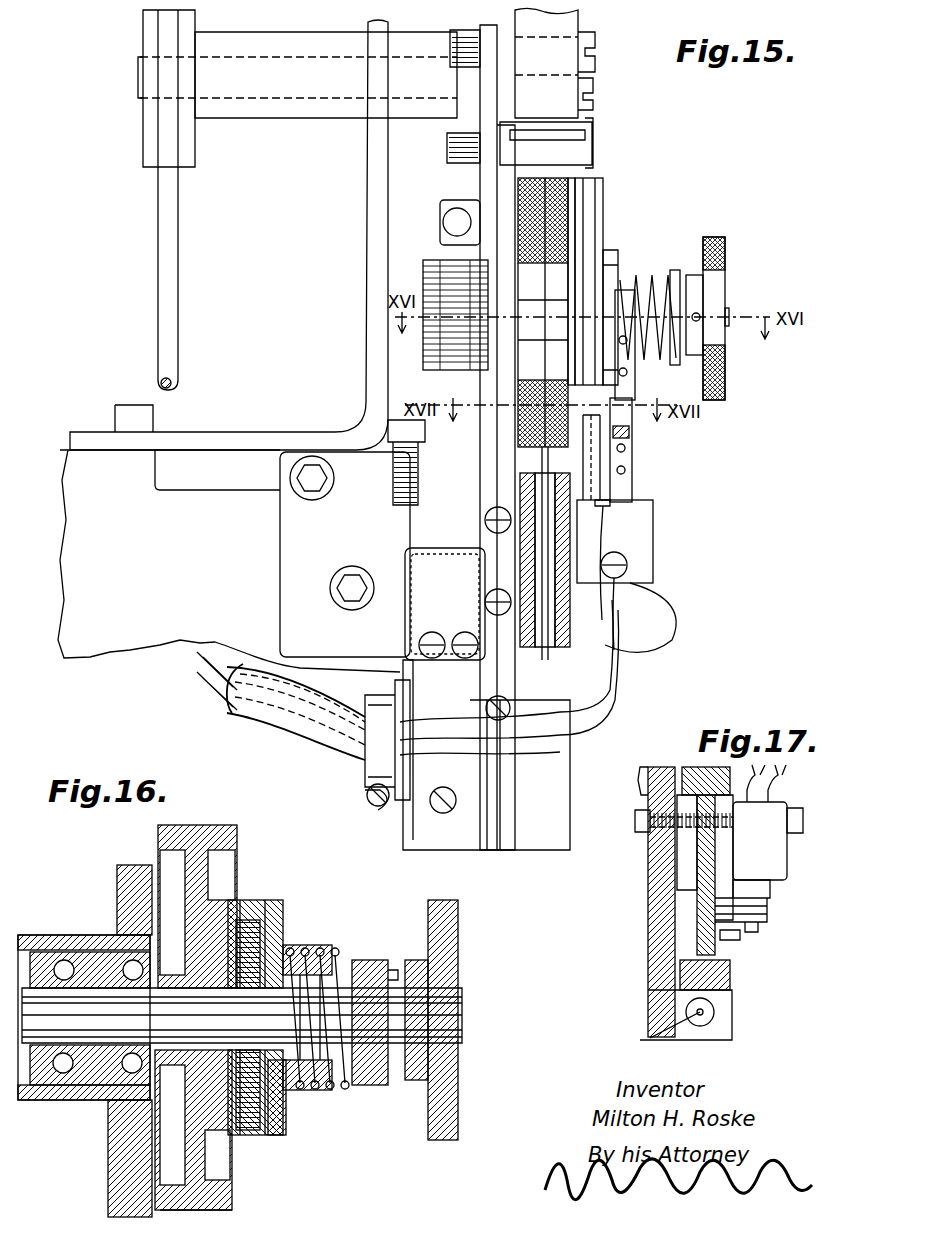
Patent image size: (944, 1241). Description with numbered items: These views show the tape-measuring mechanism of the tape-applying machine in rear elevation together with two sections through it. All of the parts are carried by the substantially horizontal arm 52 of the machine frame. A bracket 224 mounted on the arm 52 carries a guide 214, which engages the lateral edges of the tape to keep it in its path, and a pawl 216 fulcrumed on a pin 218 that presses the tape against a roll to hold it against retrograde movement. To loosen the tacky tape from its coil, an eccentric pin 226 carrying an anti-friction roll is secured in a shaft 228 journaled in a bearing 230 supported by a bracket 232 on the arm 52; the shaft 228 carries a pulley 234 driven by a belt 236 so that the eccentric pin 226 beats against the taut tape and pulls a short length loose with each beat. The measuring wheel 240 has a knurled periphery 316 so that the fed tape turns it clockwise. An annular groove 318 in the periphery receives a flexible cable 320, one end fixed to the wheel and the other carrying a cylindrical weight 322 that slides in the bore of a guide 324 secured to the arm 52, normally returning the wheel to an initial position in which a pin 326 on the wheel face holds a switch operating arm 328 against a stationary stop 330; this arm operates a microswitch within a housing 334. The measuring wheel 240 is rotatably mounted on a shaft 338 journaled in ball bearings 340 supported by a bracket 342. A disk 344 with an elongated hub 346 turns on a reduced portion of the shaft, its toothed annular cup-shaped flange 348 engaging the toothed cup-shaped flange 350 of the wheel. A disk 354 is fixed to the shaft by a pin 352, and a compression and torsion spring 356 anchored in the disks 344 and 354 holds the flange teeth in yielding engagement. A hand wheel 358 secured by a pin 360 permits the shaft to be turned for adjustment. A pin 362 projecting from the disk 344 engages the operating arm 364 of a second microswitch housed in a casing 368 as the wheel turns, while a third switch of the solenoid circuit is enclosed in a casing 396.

In FIG. 15, the arm 52 is at (98, 460).
In FIG. 15, the guide 214 is at (588, 140).
In FIG. 15, the pawl 216 is at (556, 48).
In FIG. 15, the pin 218 is at (596, 45).
In FIG. 15, the bracket 224 is at (484, 183).
In FIG. 15, the eccentric pin 226 is at (596, 108).
In FIG. 15, the shaft 228 is at (337, 100).
In FIG. 15, the bearing 230 is at (270, 121).
In FIG. 15, the bracket 232 is at (372, 160).
In FIG. 15, the pulley 234 is at (143, 160).
In FIG. 15, the belt 236 is at (172, 215).
In FIG. 15, the measuring wheel 240 is at (572, 202).
In FIG. 16, the measuring wheel 240 is at (258, 852).
In FIG. 17, the measuring wheel 240 is at (732, 982).
In FIG. 15, the knurled periphery 316 is at (578, 187).
In FIG. 16, the knurled periphery 316 is at (197, 825).
In FIG. 15, the annular groove 318 is at (592, 230).
In FIG. 15, the flexible cable 320 is at (545, 525).
In FIG. 16, the flexible cable 320 is at (200, 1215).
In FIG. 17, the flexible cable 320 is at (698, 1014).
In FIG. 15, the cylindrical weight 322 is at (606, 657).
In FIG. 17, the cylindrical weight 322 is at (716, 1016).
In FIG. 15, the guide 324 is at (562, 826).
In FIG. 17, the guide 324 is at (735, 1037).
In FIG. 15, the pin 326 is at (625, 435).
In FIG. 16, the pin 326 is at (283, 1100).
In FIG. 17, the pin 326 is at (722, 935).
In FIG. 15, the switch operating arm 328 is at (600, 463).
In FIG. 17, the switch operating arm 328 is at (742, 935).
In FIG. 17, the stationary stop 330 is at (770, 892).
In FIG. 15, the housing 334 is at (603, 490).
In FIG. 17, the housing 334 is at (775, 848).
In FIG. 15, the shaft 338 is at (727, 330).
In FIG. 16, the shaft 338 is at (285, 945).
In FIG. 16, the ball bearings 340 is at (130, 960).
In FIG. 15, the bracket 342 is at (492, 392).
In FIG. 16, the bracket 342 is at (110, 1110).
In FIG. 17, the bracket 342 is at (658, 975).
In FIG. 15, the disk 344 is at (596, 255).
In FIG. 16, the disk 344 is at (280, 1133).
In FIG. 16, the elongated hub 346 is at (324, 1062).
In FIG. 16, the toothed annular cup-shaped flange 348 is at (262, 930).
In FIG. 16, the toothed annular cup-shaped flange 350 is at (243, 905).
In FIG. 16, the pin 352 is at (358, 1088).
In FIG. 15, the disk 354 is at (727, 258).
In FIG. 16, the disk 354 is at (375, 1087).
In FIG. 15, the compression and torsion spring 356 is at (652, 278).
In FIG. 16, the compression and torsion spring 356 is at (347, 958).
In FIG. 15, the hand wheel 358 is at (720, 290).
In FIG. 16, the hand wheel 358 is at (456, 916).
In FIG. 15, the pin 360 is at (701, 315).
In FIG. 16, the pin 360 is at (420, 985).
In FIG. 15, the pin 362 is at (636, 370).
In FIG. 16, the pin 362 is at (312, 945).
In FIG. 15, the operating arm 364 is at (634, 452).
In FIG. 15, the casing 368 is at (652, 515).
In FIG. 15, the casing 396 is at (455, 640).